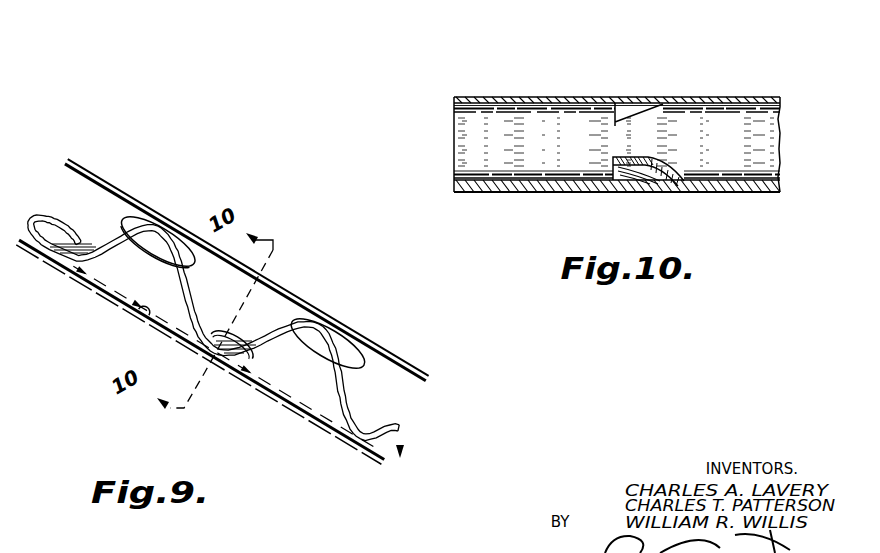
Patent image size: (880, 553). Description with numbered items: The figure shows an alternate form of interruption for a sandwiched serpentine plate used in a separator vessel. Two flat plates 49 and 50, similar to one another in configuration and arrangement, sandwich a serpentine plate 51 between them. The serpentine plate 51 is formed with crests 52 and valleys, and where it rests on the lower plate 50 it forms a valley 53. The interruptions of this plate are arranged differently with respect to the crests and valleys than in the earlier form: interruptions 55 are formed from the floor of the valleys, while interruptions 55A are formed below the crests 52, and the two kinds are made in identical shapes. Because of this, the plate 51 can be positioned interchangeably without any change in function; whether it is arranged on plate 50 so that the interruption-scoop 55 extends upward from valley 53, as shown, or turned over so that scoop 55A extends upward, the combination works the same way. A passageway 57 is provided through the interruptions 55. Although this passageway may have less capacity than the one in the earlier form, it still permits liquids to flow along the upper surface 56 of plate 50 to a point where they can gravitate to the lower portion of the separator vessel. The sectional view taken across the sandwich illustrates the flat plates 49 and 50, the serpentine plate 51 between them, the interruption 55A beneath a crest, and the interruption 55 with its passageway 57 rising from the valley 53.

In FIG. 9, the plate 49 is at (92, 172).
In FIG. 10, the plate 49 is at (492, 97).
In FIG. 9, the plate 50 is at (322, 427).
In FIG. 10, the plate 50 is at (527, 187).
In FIG. 9, the serpentine plate 51 is at (360, 401).
In FIG. 10, the serpentine plate 51 is at (453, 113).
In FIG. 9, the crest 52 is at (173, 238).
In FIG. 10, the valley 53 is at (455, 178).
In FIG. 9, the interruption 55 is at (232, 337).
In FIG. 10, the interruption 55 is at (630, 160).
In FIG. 9, the interruption 55A is at (165, 263).
In FIG. 10, the interruption 55A is at (638, 113).
In FIG. 9, the upper surface 56 is at (150, 328).
In FIG. 10, the passageway 57 is at (622, 183).